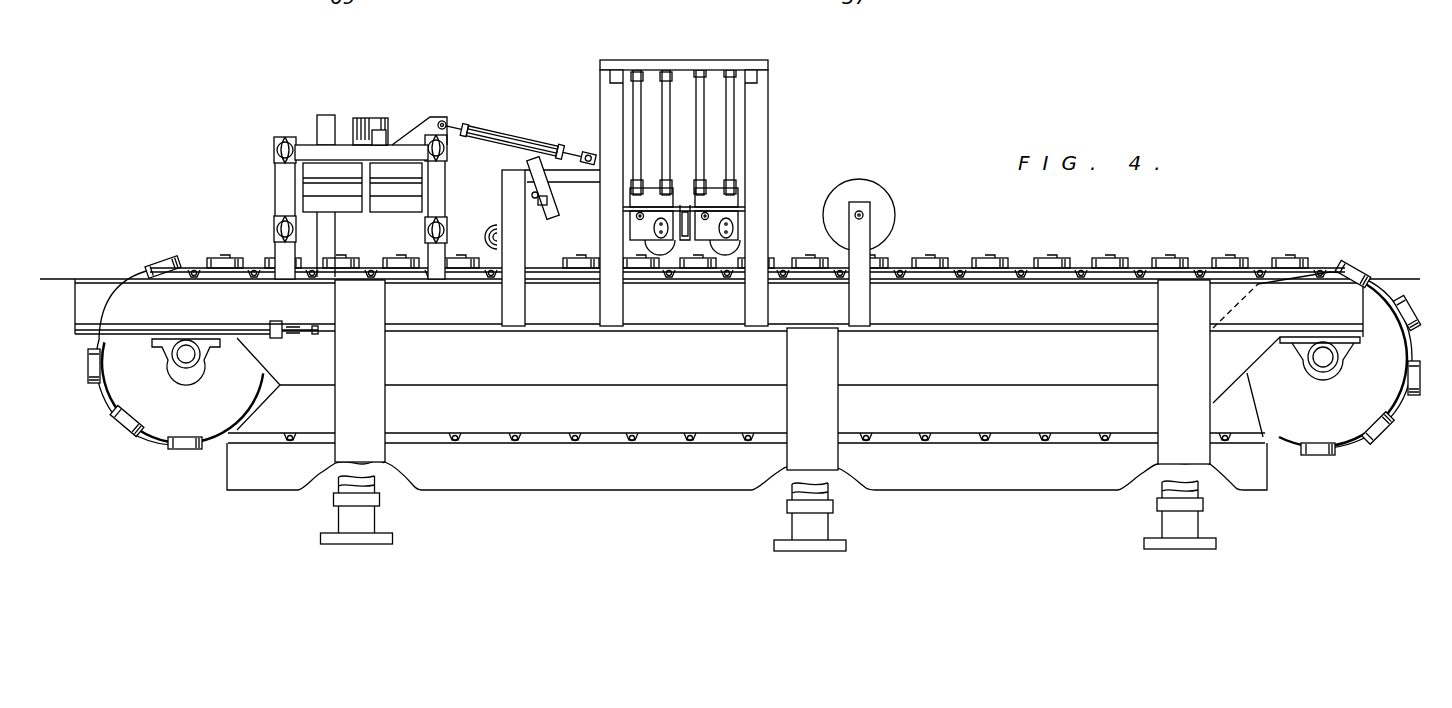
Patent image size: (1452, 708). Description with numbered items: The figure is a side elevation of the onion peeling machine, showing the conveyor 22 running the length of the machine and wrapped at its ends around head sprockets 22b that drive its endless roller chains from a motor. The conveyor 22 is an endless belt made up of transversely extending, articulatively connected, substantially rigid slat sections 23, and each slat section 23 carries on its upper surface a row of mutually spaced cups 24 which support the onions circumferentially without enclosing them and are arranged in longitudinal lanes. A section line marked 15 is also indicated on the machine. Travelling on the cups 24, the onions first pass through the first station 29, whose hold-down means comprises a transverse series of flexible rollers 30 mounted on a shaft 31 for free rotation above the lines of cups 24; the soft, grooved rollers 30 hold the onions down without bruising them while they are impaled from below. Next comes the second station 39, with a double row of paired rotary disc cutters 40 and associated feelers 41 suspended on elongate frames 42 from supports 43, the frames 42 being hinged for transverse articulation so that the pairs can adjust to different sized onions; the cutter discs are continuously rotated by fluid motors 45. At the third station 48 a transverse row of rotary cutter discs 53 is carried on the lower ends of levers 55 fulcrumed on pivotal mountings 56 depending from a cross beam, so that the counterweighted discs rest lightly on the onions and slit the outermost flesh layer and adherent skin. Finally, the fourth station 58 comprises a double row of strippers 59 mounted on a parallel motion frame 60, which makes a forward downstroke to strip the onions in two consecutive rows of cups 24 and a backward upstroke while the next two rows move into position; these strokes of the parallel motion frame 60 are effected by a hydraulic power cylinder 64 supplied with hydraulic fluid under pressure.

The section line 15- 15 is at (69, 295).
The conveyor 22 is at (1090, 245).
The head sprockets 22b is at (1377, 393).
The slat sections 23 is at (1210, 268).
The cups 24 is at (1035, 258).
The first station 29 is at (892, 178).
The flexible rollers 30 is at (885, 212).
The shaft 31 is at (860, 210).
The second station 39 is at (785, 112).
The rotary disc cutters 40 is at (668, 256).
The feelers 41 is at (686, 255).
The elongate frames 42 is at (665, 100).
The supports 43 is at (660, 68).
The fluid motors 45 is at (748, 224).
The third station 48 is at (527, 160).
The rotary cutter discs 53 is at (493, 237).
The levers 55 is at (548, 183).
The pivotal mountings 56 is at (540, 206).
The fourth station 58 is at (410, 113).
The strippers 59 is at (404, 207).
The parallel motion frame 60 is at (277, 172).
The hydraulic power cylinder 64 is at (486, 132).